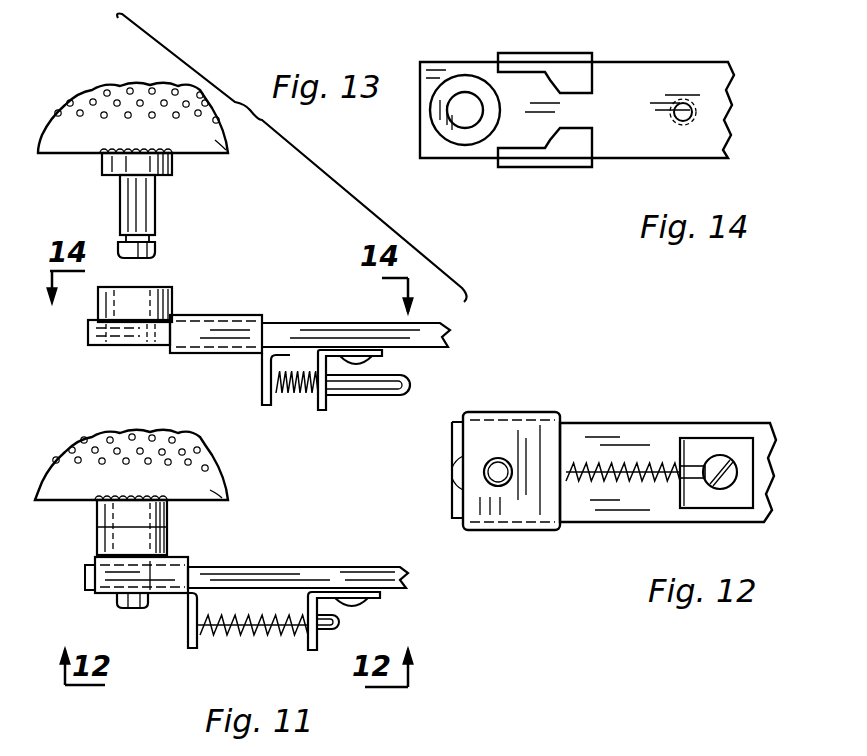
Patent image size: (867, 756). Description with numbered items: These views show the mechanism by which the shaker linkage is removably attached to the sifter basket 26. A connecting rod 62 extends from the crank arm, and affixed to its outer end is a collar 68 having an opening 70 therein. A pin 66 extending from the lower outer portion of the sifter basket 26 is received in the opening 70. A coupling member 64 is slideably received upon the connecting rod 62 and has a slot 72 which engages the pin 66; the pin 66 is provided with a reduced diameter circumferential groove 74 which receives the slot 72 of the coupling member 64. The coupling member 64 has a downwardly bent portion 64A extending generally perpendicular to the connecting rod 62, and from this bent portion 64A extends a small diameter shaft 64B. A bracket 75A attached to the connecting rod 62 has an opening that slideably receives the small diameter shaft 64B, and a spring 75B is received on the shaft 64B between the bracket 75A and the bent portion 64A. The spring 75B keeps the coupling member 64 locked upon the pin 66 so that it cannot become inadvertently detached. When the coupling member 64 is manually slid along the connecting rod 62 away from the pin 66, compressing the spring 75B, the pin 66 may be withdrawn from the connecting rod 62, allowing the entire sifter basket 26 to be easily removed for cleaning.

In FIG. 13, the sifter basket 26 is at (226, 155).
In FIG. 11, the sifter basket 26 is at (228, 502).
In FIG. 13, the connecting rod 62 is at (98, 340).
In FIG. 14, the connecting rod 62 is at (535, 120).
In FIG. 12, the connecting rod 62 is at (664, 435).
In FIG. 11, the connecting rod 62 is at (246, 575).
In FIG. 13, the coupling member 64 is at (233, 330).
In FIG. 14, the coupling member 64 is at (565, 72).
In FIG. 12, the coupling member 64 is at (552, 420).
In FIG. 11, the coupling member 64 is at (180, 572).
In FIG. 13, the downwardly bent portion 64A is at (262, 382).
In FIG. 13, the small diameter shaft 64B is at (390, 387).
In FIG. 13, the pin 66 is at (133, 197).
In FIG. 11, the pin 66 is at (150, 608).
In FIG. 13, the collar 68 is at (160, 302).
In FIG. 14, the collar 68 is at (450, 135).
In FIG. 11, the collar 68 is at (110, 541).
In FIG. 14, the opening 70 is at (468, 100).
In FIG. 12, the slot 72 is at (460, 476).
In FIG. 13, the reduced diameter circumferential groove 74 is at (157, 240).
In FIG. 13, the bracket 75A is at (320, 408).
In FIG. 13, the spring 75B is at (302, 370).
In FIG. 11, the spring 75B is at (247, 637).